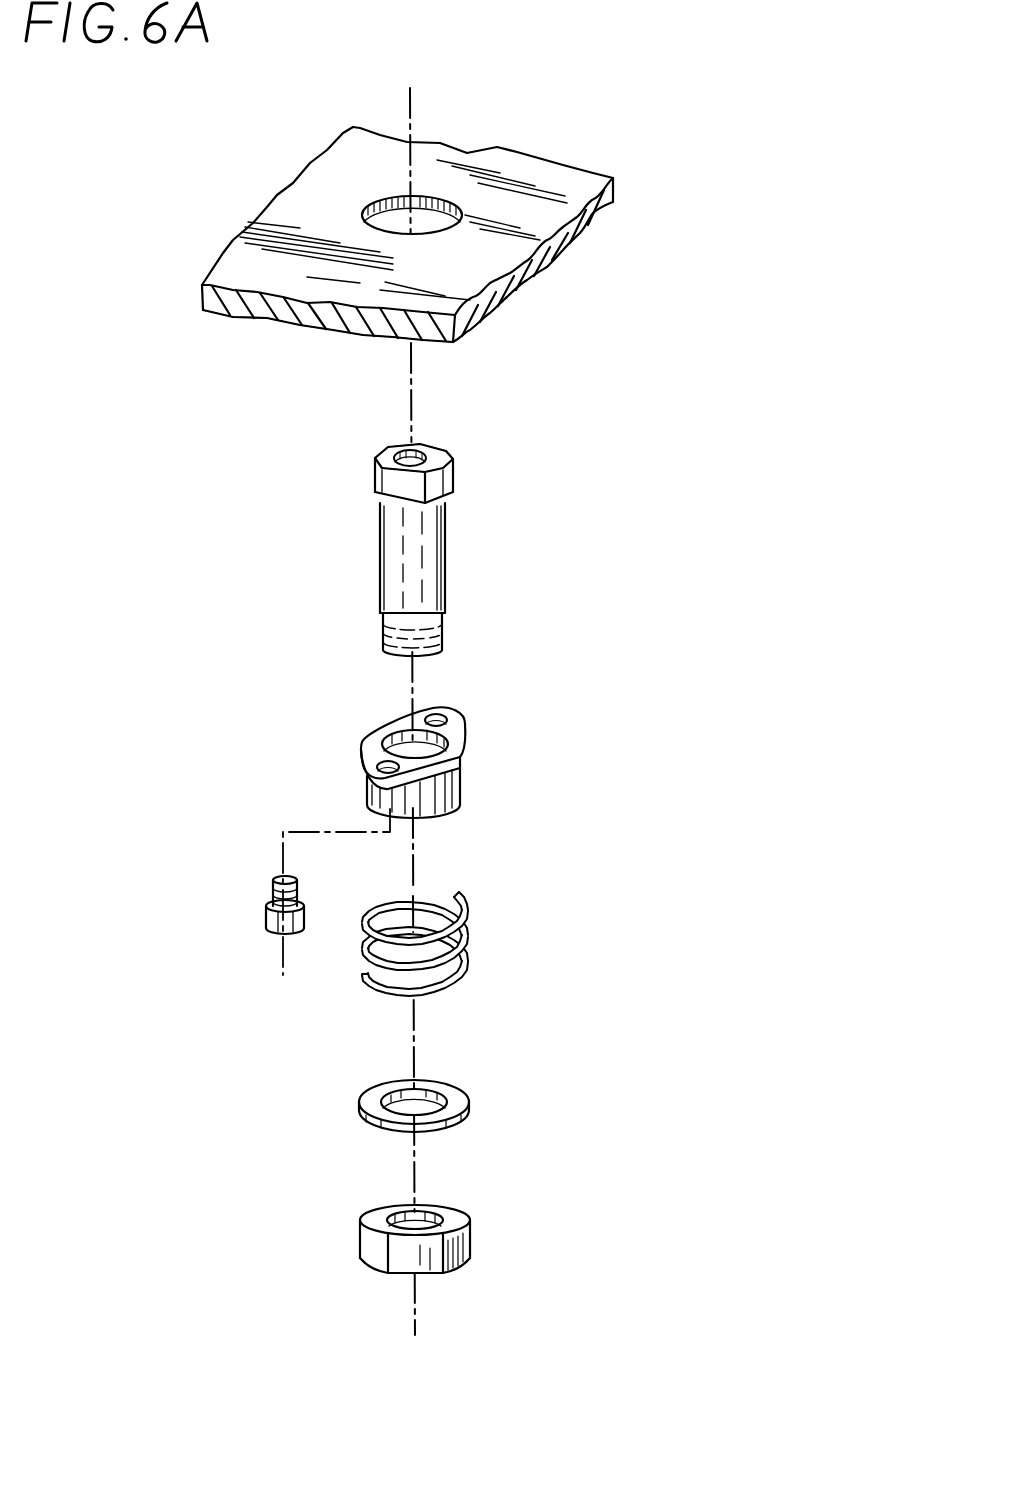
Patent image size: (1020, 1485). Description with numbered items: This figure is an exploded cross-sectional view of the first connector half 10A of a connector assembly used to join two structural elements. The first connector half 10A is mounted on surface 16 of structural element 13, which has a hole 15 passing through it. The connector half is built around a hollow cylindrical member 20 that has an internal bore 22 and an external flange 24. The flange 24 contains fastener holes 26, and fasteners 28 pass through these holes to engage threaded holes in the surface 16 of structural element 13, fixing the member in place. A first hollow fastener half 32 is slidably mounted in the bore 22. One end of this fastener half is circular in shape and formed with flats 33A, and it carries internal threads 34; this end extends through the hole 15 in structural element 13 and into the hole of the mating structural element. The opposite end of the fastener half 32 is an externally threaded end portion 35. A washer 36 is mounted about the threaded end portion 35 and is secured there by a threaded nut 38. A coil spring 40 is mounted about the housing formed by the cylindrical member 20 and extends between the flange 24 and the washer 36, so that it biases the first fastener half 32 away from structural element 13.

The first connector half 10A is at (610, 95).
The structural element 13 is at (585, 247).
The hole 15 is at (432, 208).
The surface 16 is at (280, 328).
The first hollow fastener half 32 is at (448, 540).
The flats 33A is at (385, 487).
The internal threads 34 is at (418, 452).
The externally threaded end portion 35 is at (442, 630).
The hollow cylindrical member 20 is at (464, 782).
The internal bore 22 is at (397, 743).
The external flange 24 is at (466, 736).
The fastener holes 26 is at (441, 716).
The fasteners 28 is at (266, 926).
The coil spring 40 is at (470, 939).
The washer 36 is at (471, 1101).
The threaded nut 38 is at (471, 1226).